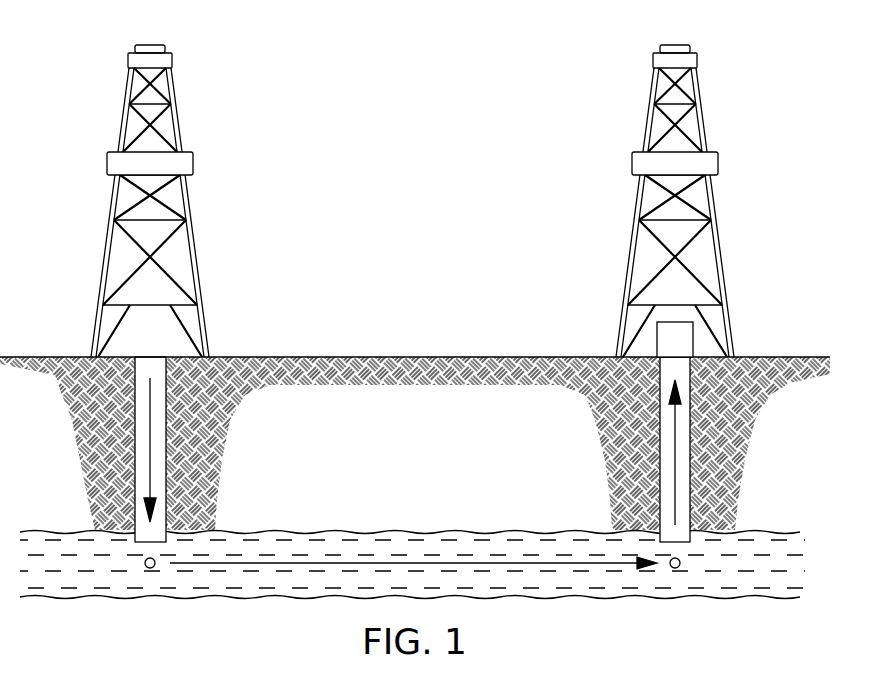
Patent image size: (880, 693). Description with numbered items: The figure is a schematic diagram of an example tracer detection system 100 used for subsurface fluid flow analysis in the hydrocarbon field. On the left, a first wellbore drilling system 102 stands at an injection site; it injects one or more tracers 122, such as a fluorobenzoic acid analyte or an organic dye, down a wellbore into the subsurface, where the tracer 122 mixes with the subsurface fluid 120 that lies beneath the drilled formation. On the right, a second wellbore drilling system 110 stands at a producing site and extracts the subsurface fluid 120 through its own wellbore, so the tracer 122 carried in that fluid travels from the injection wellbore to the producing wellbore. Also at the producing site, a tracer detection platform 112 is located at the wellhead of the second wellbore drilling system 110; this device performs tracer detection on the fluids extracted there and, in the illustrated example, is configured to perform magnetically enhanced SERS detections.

The tracer detection system 100 is at (289, 62).
The first wellbore drilling system 102 is at (118, 162).
The second wellbore drilling system 110 is at (712, 163).
The tracer detection platform 112 is at (690, 338).
The subsurface fluid 120 is at (52, 590).
The tracer 122 is at (150, 569).